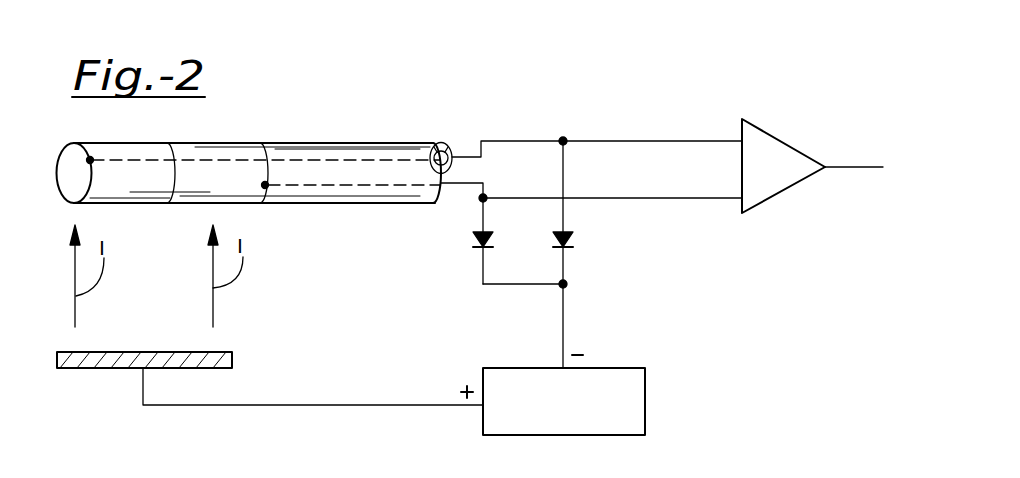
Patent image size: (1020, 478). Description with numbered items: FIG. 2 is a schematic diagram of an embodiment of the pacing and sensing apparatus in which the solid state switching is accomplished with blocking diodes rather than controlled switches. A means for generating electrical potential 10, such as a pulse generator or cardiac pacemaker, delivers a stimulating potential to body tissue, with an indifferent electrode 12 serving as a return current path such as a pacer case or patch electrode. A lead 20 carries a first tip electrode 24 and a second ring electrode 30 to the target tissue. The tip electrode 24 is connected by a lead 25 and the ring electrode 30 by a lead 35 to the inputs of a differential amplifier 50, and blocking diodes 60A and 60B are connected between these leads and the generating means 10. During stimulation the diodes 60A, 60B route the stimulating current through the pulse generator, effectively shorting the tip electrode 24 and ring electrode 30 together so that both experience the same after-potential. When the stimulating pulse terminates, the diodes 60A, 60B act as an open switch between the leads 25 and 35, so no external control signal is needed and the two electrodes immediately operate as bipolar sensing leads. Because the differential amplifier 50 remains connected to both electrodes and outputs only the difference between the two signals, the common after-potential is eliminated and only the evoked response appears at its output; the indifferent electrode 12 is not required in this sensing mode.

The means for generating electrical potential 10 is at (645, 367).
The indifferent electrode 12 is at (232, 353).
The lead 20 is at (207, 138).
The tip electrode 24 is at (57, 170).
The lead 25 is at (462, 155).
The ring electrode 30 is at (240, 142).
The lead 35 is at (462, 183).
The differential amplifier 50 is at (772, 133).
The blocking diode 60A is at (476, 237).
The blocking diode 60B is at (572, 236).